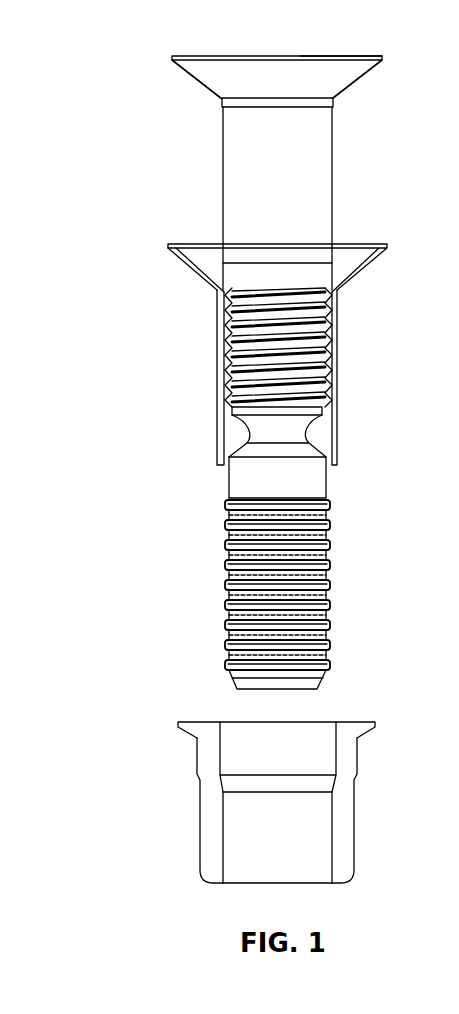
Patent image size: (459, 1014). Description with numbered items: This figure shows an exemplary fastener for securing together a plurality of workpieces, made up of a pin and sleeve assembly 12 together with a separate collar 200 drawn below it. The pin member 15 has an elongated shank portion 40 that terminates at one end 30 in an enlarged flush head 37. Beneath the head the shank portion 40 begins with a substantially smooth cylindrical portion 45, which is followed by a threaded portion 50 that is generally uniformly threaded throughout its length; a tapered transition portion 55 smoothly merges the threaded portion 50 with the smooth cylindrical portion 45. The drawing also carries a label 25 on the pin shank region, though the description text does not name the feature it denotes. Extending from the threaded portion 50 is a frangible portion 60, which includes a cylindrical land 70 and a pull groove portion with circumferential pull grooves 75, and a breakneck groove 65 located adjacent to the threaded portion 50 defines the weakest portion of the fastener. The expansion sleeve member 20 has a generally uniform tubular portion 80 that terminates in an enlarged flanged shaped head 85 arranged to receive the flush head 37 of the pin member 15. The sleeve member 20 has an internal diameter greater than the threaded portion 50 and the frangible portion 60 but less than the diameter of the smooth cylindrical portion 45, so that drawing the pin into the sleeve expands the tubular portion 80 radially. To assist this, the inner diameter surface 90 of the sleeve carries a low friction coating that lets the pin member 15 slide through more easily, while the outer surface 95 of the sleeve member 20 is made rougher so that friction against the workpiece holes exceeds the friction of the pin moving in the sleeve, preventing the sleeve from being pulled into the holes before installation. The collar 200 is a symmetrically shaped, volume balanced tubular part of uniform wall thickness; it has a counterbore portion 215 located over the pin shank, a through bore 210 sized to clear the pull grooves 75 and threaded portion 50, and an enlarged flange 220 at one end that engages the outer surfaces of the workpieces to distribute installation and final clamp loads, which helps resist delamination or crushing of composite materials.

The pin and sleeve assembly 12 is at (207, 73).
The pin member 15 is at (328, 55).
The one end 30 is at (213, 57).
The enlarged flush head 37 is at (222, 89).
The pin shank 25 is at (325, 165).
The smooth cylindrical portion 45 is at (257, 166).
The shank portion 40 is at (240, 230).
The tapered transition portion 55 is at (360, 256).
The enlarged flanged shaped head 85 is at (195, 259).
The sleeve member 20 is at (340, 368).
The tubular portion 80 is at (227, 350).
The threaded portion 50 is at (240, 365).
The outer surface 95 is at (325, 397).
The inner diameter surface 90 is at (242, 431).
The breakneck groove 65 is at (295, 431).
The cylindrical land 70 is at (247, 478).
The frangible portion 60 is at (312, 478).
The pull grooves 75 is at (236, 594).
The collar 200 is at (197, 775).
The counterbore portion 215 is at (327, 740).
The enlarged flange 220 is at (186, 730).
The through bore 210 is at (230, 850).